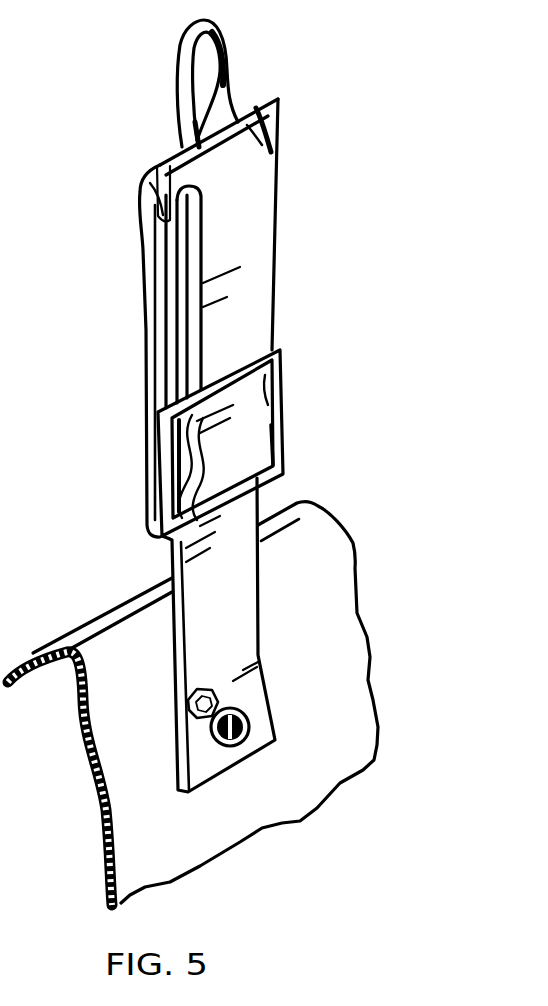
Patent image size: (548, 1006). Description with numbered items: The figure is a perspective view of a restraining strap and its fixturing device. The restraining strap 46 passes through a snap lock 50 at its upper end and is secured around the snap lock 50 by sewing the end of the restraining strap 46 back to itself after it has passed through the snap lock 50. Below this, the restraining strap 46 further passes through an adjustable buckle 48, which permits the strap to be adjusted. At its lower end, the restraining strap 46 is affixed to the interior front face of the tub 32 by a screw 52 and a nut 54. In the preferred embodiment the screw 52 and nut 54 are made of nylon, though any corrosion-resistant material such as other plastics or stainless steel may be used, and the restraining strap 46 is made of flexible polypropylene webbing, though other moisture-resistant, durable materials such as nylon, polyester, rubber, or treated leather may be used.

The tub 32 is at (320, 607).
The restraining strap 46 is at (200, 568).
The adjustable buckle 48 is at (282, 445).
The snap lock 50 is at (266, 106).
The screw 52 is at (233, 745).
The nut 54 is at (190, 697).